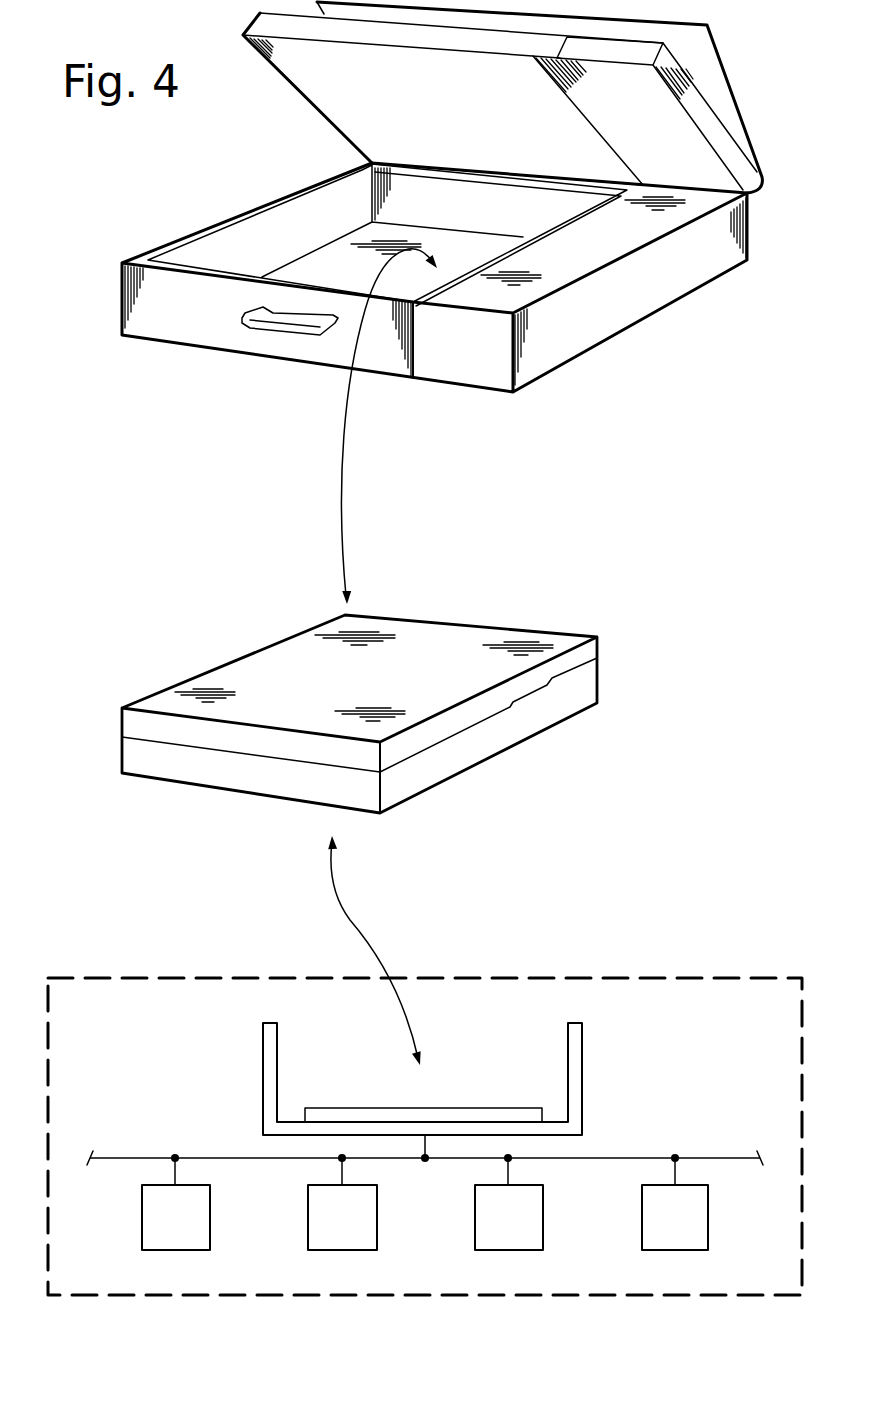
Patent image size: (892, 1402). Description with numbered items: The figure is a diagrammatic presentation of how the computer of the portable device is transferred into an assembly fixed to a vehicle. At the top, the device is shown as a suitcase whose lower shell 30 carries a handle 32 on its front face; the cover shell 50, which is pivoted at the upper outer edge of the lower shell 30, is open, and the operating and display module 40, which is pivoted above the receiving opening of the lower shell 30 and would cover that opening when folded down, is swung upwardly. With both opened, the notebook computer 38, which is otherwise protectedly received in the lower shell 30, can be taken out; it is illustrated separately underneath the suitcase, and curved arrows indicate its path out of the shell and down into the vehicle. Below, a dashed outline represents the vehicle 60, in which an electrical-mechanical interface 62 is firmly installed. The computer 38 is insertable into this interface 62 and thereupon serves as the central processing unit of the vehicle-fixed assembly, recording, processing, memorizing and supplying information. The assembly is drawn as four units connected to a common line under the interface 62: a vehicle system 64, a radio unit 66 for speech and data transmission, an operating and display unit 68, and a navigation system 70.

The lower shell 30 is at (178, 356).
The handle 32 is at (276, 330).
The notebook computer 38 is at (610, 683).
The operating and display module 40 is at (345, 103).
The cover shell 50 is at (745, 88).
The vehicle 60 is at (717, 978).
The electrical-mechanical interface 62 is at (578, 1050).
The vehicle system 64 is at (154, 1213).
The radio unit 66 is at (320, 1213).
The operating and display unit 68 is at (488, 1213).
The navigation system 70 is at (654, 1213).